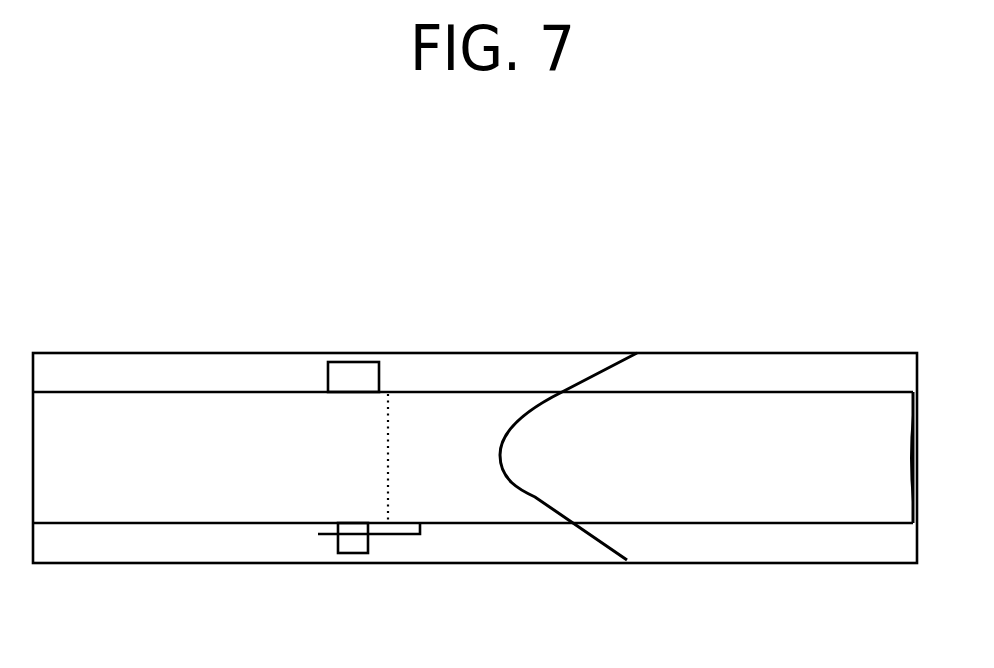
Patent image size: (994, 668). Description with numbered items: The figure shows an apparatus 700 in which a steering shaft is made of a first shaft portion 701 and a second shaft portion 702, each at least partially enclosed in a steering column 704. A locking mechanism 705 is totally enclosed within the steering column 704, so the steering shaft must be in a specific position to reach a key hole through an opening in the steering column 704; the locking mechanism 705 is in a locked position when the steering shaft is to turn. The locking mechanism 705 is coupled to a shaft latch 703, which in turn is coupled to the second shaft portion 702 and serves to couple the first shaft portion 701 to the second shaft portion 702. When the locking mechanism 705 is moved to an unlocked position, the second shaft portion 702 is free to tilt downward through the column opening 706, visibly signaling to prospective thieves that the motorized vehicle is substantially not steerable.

The apparatus 700 is at (103, 239).
The first shaft portion 701 is at (185, 465).
The second shaft portion 702 is at (644, 493).
The shaft latch 703 is at (423, 545).
The steering column 704 is at (389, 340).
The locking mechanism 705 is at (373, 563).
The column opening 706 is at (613, 368).